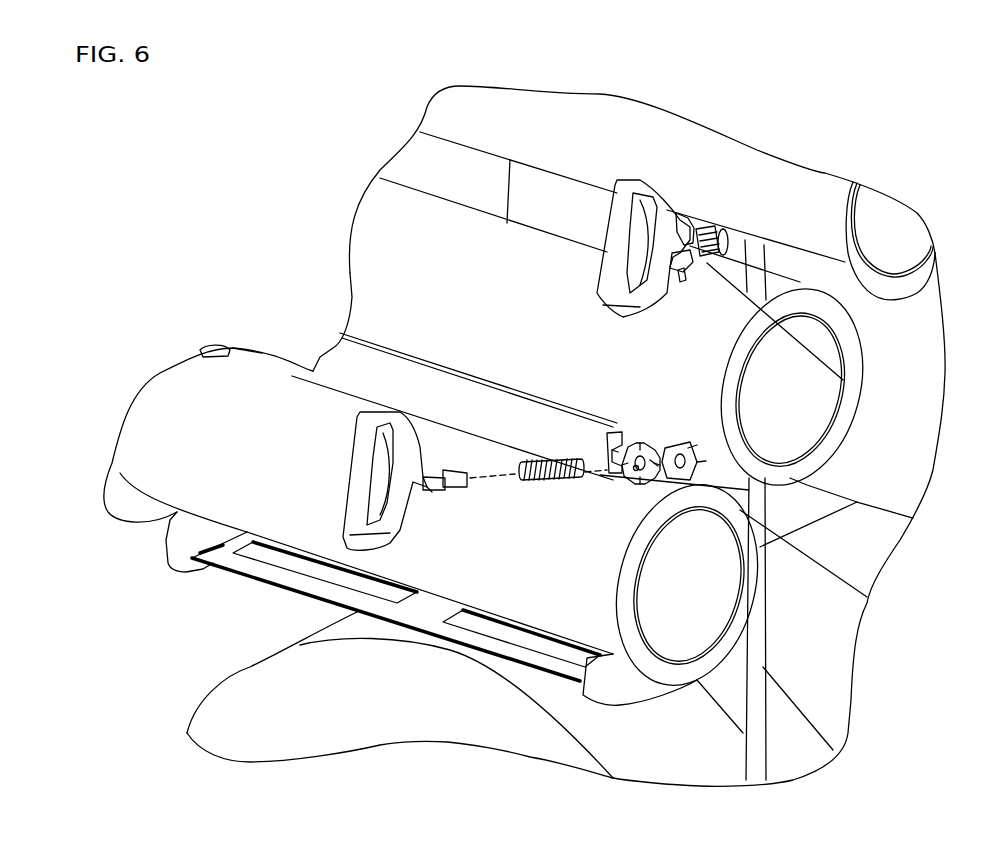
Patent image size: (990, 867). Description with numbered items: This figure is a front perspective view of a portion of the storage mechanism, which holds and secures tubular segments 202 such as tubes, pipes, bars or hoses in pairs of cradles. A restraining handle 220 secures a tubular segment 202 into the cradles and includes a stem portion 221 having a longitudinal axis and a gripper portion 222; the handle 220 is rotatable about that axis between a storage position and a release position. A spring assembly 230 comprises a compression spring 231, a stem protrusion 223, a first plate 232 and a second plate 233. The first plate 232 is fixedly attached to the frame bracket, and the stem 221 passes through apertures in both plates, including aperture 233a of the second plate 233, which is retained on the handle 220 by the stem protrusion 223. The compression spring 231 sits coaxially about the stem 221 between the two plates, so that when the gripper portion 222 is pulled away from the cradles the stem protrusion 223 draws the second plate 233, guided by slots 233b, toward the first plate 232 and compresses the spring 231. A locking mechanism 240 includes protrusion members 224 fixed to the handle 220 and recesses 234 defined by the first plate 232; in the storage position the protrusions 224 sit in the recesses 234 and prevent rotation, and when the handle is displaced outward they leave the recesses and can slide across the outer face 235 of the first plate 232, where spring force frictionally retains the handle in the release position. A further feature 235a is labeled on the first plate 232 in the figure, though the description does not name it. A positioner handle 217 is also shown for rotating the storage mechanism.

The tubular segment 202 is at (430, 285).
The positioner handle 217 is at (760, 703).
The restraining handle 220 is at (584, 272).
The stem portion 221 is at (440, 470).
The gripper portion 222 is at (640, 307).
The stem protrusion 223 is at (460, 488).
The protrusion members 224 is at (681, 282).
The spring assembly 230 is at (725, 203).
The compression spring 231 is at (703, 228).
The first plate 232 is at (668, 275).
The second plate 233 is at (718, 262).
The aperture 233a is at (843, 380).
The slots 233b is at (790, 533).
The recesses 234 is at (652, 462).
The outer face 235 is at (613, 430).
The pivot 235a is at (636, 470).
The locking mechanism 240 is at (683, 178).